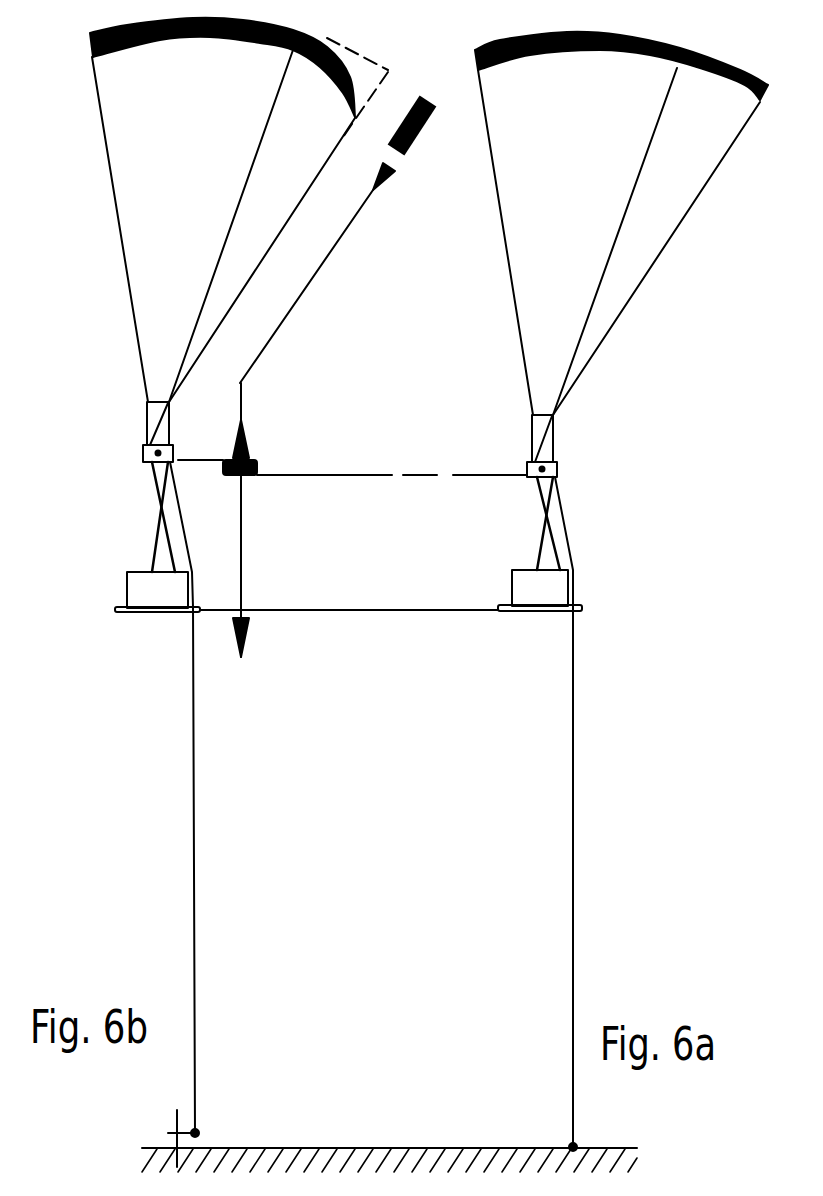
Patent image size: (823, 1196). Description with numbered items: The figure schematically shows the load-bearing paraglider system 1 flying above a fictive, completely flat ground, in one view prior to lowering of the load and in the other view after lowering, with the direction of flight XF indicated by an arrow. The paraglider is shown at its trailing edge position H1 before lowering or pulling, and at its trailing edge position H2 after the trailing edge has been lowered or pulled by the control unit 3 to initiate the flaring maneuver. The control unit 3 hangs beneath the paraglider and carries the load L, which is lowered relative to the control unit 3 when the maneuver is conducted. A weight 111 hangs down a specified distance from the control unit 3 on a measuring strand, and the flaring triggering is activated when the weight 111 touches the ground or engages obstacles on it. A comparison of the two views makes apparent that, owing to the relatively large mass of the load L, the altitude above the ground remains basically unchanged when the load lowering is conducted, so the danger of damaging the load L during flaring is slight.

In FIG. 6B, the load-bearing paraglider system 1 is at (104, 260).
In FIG. 6A, the load-bearing paraglider system 1 is at (485, 271).
In FIG. 6B, the control unit 3 is at (145, 449).
In FIG. 6A, the control unit 3 is at (557, 466).
In FIG. 6B, the load L is at (153, 593).
In FIG. 6A, the load L is at (535, 590).
In FIG. 6B, the weight 111 is at (197, 1131).
In FIG. 6A, the weight 111 is at (571, 1145).
In FIG. 6A, the position of trailing edge before lowering H1 is at (712, 78).
In FIG. 6B, the position of trailing edge after lowering H2 is at (327, 68).
In FIG. 6B, the direction of flight XF is at (297, 822).
In FIG. 6A, the direction of flight XF is at (643, 820).